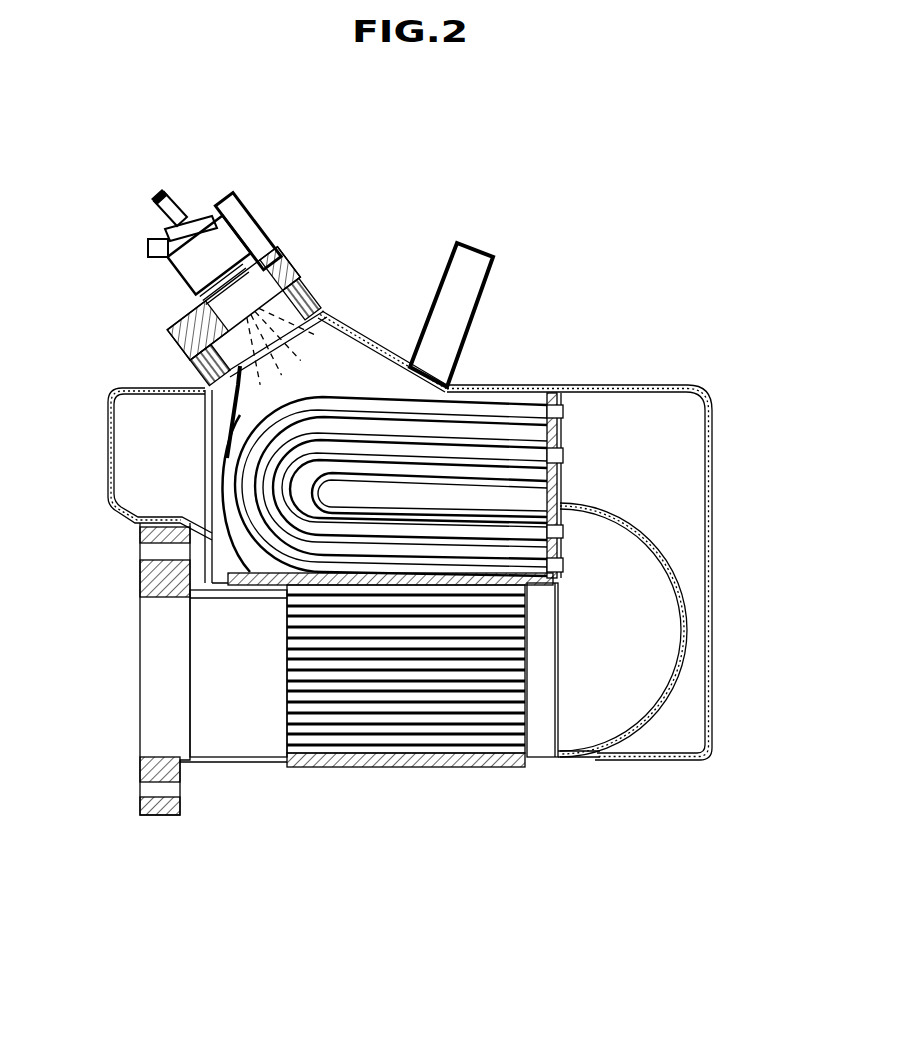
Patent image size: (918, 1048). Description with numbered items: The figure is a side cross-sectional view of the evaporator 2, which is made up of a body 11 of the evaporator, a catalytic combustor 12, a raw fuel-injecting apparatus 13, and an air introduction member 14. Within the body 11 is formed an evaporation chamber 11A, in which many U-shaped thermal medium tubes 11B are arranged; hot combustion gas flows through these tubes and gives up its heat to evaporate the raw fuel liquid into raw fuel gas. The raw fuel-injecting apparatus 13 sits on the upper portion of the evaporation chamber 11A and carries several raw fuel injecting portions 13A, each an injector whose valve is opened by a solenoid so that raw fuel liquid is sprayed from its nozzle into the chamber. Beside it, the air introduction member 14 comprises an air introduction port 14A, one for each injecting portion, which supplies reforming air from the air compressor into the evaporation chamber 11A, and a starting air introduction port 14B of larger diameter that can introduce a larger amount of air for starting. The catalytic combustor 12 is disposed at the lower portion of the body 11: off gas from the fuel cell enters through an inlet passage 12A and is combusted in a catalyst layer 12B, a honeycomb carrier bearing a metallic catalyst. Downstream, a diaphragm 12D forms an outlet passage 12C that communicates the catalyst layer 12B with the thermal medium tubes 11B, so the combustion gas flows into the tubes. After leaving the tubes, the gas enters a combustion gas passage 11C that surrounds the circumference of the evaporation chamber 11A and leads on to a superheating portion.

The evaporator 2 is at (560, 232).
The body of the evaporator 11 is at (513, 367).
The evaporation chamber 11A is at (220, 422).
The thermal medium tubes 11B is at (483, 418).
The combustion gas passage 11C is at (113, 505).
The catalytic combustor 12 is at (477, 785).
The inlet passage 12A is at (263, 707).
The catalyst layer 12B is at (427, 705).
The outlet passage 12C is at (603, 703).
The diaphragm 12D is at (687, 650).
The raw fuel-injecting apparatus 13 is at (176, 192).
The raw fuel injecting portion 13A is at (205, 250).
The air introduction member 14 is at (393, 186).
The air introduction port 14A is at (265, 232).
The starting air introduction port 14B is at (440, 298).